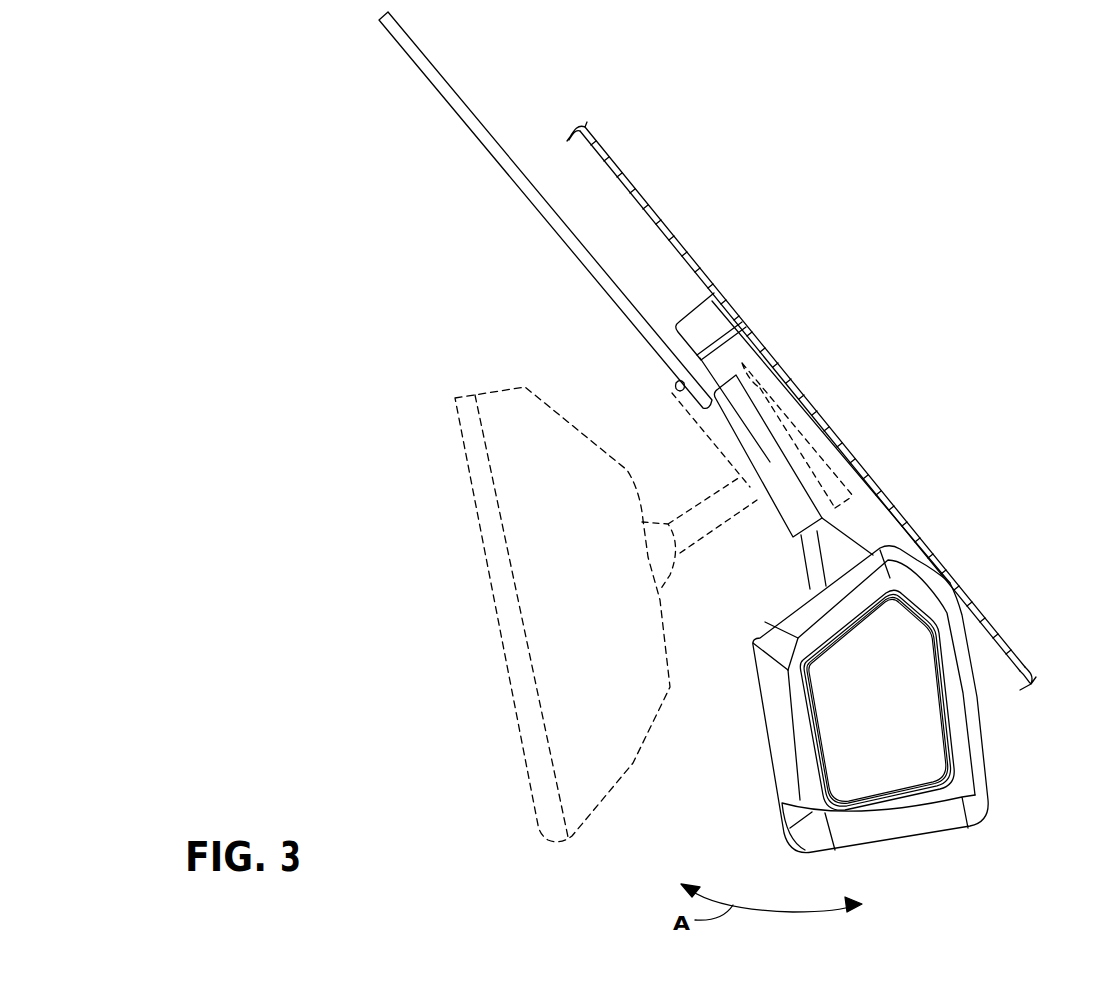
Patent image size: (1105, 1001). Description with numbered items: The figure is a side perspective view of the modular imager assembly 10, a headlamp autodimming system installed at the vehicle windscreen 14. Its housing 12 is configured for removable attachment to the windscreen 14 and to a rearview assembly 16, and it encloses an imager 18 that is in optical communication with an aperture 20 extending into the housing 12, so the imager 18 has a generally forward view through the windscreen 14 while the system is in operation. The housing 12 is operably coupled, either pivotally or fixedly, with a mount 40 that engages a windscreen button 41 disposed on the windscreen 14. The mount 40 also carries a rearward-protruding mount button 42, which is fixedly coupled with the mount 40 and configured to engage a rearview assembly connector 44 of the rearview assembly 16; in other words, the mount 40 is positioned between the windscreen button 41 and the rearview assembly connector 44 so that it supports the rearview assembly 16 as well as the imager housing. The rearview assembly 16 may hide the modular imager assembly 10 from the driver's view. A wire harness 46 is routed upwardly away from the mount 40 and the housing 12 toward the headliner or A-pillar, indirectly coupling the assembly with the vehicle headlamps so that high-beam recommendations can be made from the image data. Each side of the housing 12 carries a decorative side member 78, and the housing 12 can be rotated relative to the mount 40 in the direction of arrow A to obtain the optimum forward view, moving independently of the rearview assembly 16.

The modular imager assembly 10 is at (958, 485).
The housing 12 is at (927, 719).
The vehicle windscreen 14 is at (660, 220).
The rearview assembly 16 is at (633, 763).
The imager 18 is at (973, 710).
The aperture 20 is at (983, 745).
The mount 40 is at (708, 322).
The windscreen button 41 is at (790, 370).
The mount button 42 is at (738, 442).
The rearview assembly connector 44 is at (680, 378).
The wire harness 46 is at (565, 243).
The decorative side members 78 is at (882, 733).